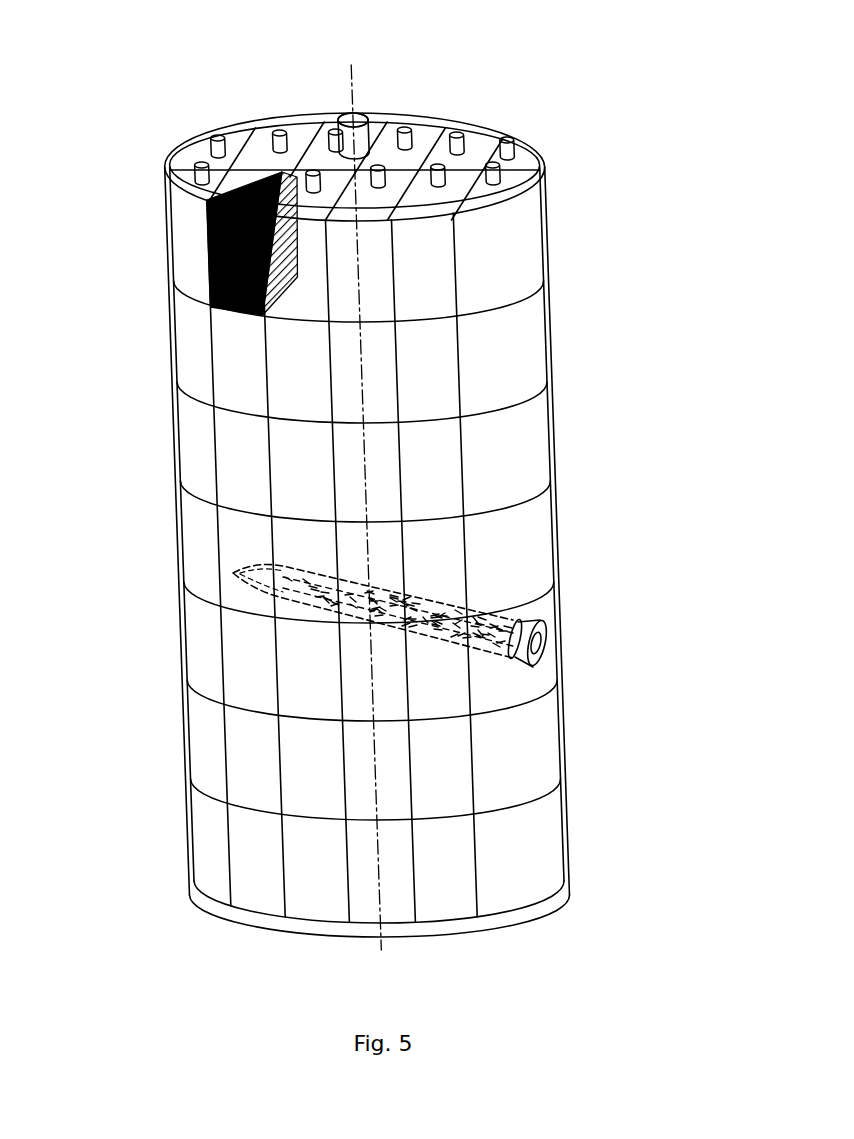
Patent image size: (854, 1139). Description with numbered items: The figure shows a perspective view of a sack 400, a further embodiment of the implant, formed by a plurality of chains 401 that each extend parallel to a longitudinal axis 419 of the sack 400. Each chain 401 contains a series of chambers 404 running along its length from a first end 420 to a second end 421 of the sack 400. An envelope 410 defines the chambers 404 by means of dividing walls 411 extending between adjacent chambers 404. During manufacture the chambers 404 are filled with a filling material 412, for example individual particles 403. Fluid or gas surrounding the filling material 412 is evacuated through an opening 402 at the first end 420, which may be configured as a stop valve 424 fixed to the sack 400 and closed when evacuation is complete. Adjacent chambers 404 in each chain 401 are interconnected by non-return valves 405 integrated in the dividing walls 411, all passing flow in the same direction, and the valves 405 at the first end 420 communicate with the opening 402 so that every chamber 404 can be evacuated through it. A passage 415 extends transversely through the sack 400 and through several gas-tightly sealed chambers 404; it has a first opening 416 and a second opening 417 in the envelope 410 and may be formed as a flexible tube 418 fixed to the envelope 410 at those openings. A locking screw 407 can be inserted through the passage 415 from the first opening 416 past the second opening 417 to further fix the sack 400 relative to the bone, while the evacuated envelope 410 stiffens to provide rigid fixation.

The sack 400 is at (395, 526).
The chains 401 is at (502, 139).
The opening 402 is at (380, 125).
The individual particles 403 is at (210, 282).
The chambers 404 is at (198, 437).
The non-return valve 405 is at (500, 147).
The locking screw 407 is at (517, 652).
The envelope 410 is at (570, 840).
The dividing walls 411 is at (517, 397).
The filling material 412 is at (199, 241).
The passage 415 is at (289, 620).
The first opening 416 is at (525, 667).
The second opening 417 is at (270, 602).
The flexible tube 418 is at (500, 617).
The longitudinal axis 419 is at (380, 947).
The first end 420 is at (212, 198).
The second end 421 is at (203, 905).
The stop valve 424 is at (358, 152).